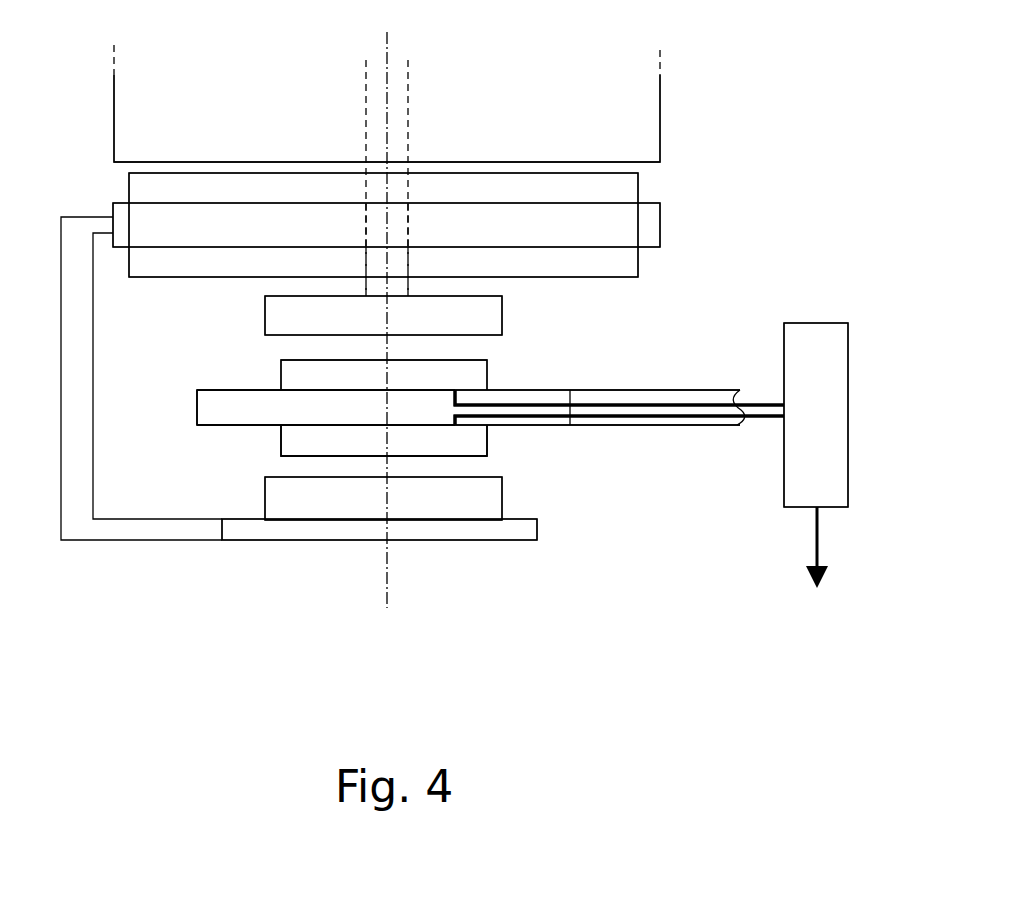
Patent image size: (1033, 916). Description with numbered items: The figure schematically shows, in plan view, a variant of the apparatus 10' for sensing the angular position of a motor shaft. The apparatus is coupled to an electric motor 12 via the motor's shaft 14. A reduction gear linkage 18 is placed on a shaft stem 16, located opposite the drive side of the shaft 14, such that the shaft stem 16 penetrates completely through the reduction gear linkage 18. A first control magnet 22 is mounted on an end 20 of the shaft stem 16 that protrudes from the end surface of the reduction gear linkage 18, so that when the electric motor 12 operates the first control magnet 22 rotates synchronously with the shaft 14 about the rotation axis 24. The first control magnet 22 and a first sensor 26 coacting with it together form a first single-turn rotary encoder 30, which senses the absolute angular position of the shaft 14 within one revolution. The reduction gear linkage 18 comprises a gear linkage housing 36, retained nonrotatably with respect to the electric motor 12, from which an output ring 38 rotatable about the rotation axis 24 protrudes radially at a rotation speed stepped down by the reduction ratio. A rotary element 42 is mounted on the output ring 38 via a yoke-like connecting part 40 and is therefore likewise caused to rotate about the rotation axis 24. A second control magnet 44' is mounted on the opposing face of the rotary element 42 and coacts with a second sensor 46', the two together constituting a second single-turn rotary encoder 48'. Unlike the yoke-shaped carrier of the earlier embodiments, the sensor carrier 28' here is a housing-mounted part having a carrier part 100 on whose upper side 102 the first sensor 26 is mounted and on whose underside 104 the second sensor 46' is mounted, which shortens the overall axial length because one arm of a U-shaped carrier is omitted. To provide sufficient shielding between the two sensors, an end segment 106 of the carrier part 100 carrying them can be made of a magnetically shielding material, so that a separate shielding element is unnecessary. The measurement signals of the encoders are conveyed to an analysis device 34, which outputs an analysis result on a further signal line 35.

The apparatus 10' is at (481, 271).
The electric motor 12 is at (640, 145).
The shaft 14 is at (408, 120).
The shaft stem 16 is at (408, 215).
The reduction gear linkage 18 is at (100, 178).
The end of shaft stem 20 is at (398, 288).
The first control magnet 22 is at (502, 322).
The rotation axis 24 is at (387, 600).
The first sensor 26 is at (475, 368).
The sensor carrier 28' is at (490, 368).
The first single-turn rotary encoder 30 is at (215, 331).
The analysis device 34 is at (807, 333).
The further signal line 35 is at (815, 540).
The gear linkage housing 36 is at (630, 268).
The output ring 38 is at (652, 222).
The connecting part 40 is at (87, 528).
The rotary element 42 is at (528, 533).
The second control magnet 44' is at (326, 498).
The second sensor 46' is at (342, 449).
The second single-turn rotary encoder 48' is at (405, 491).
The carrier part 100 is at (648, 397).
The upper side 102 is at (220, 388).
The underside 104 is at (212, 426).
The end segment 106 is at (212, 408).